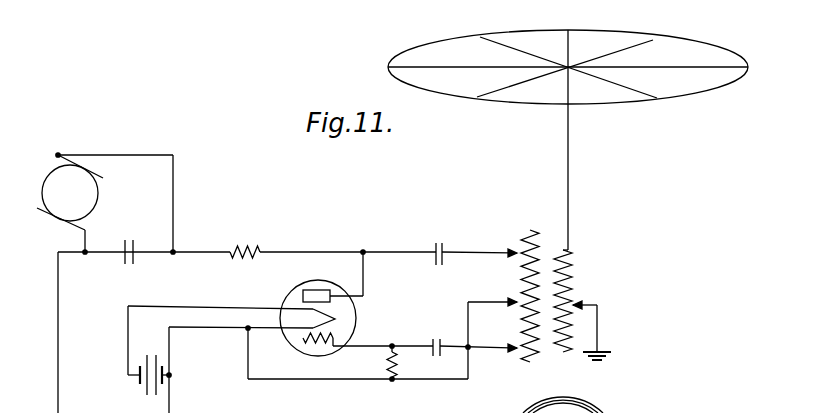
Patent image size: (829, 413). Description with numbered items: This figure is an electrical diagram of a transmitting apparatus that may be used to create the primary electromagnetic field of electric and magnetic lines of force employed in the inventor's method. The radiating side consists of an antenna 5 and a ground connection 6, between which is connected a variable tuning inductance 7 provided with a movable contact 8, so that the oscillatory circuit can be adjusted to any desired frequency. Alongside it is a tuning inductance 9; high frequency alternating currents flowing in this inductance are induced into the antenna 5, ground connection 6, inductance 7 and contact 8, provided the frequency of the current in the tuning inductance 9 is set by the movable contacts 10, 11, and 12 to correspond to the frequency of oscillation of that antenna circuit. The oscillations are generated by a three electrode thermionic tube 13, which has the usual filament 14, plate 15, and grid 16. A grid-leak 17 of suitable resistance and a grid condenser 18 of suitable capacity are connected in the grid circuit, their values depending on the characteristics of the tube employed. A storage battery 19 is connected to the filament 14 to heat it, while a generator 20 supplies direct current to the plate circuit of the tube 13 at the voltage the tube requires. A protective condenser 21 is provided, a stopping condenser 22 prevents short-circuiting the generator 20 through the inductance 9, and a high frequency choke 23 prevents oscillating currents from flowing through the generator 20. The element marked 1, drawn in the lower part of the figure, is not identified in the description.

The receiver 1 is at (603, 411).
The antenna 5 is at (700, 52).
The ground connection 6 is at (604, 357).
The variable tuning inductance 7 is at (573, 261).
The movable contact 8 is at (600, 318).
The tuning inductance 9 is at (524, 231).
The movable contact 10 is at (512, 251).
The movable contact 11 is at (512, 298).
The movable contact 12 is at (512, 344).
The three electrode thermionic tube 13 is at (298, 290).
The filament 14 is at (338, 314).
The plate 15 is at (306, 290).
The grid 16 is at (315, 343).
The grid-leak 17 is at (398, 367).
The grid condenser 18 is at (432, 340).
The storage battery 19 is at (163, 357).
The generator 20 is at (92, 204).
The protective condenser 21 is at (124, 263).
The stopping condenser 22 is at (440, 243).
The high frequency choke 23 is at (229, 259).